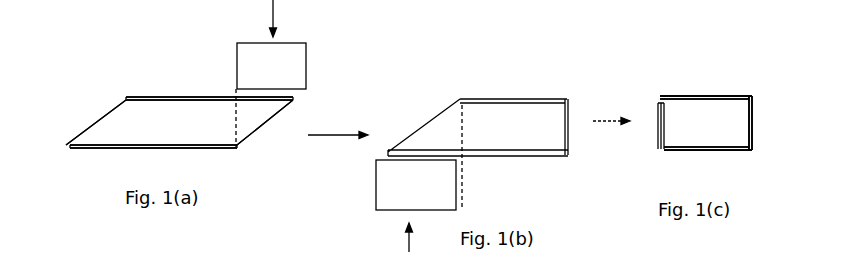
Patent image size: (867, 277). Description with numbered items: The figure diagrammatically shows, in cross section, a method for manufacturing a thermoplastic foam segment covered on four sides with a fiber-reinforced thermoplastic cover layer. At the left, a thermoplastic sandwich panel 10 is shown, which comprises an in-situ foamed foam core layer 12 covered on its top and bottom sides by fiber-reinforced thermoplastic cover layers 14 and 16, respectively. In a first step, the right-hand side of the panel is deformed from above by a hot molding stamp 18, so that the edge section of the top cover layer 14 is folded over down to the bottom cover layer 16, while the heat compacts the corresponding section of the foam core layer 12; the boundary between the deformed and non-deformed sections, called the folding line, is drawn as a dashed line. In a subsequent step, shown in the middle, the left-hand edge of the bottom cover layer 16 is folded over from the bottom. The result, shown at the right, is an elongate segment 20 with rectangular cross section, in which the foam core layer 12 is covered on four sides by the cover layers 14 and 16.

In FIG. 1A, the thermoplastic sandwich panel 10 is at (86, 105).
In FIG. 1A, the foam core layer 12 is at (181, 117).
In FIG. 1C, the foam core layer 12 is at (688, 116).
In FIG. 1A, the top cover layer 14 is at (155, 97).
In FIG. 1C, the top cover layer 14 is at (745, 113).
In FIG. 1A, the bottom cover layer 16 is at (110, 147).
In FIG. 1C, the bottom cover layer 16 is at (674, 148).
In FIG. 1A, the hot molding stamp 18 is at (299, 70).
In FIG. 1C, the elongate segment 20 is at (707, 74).